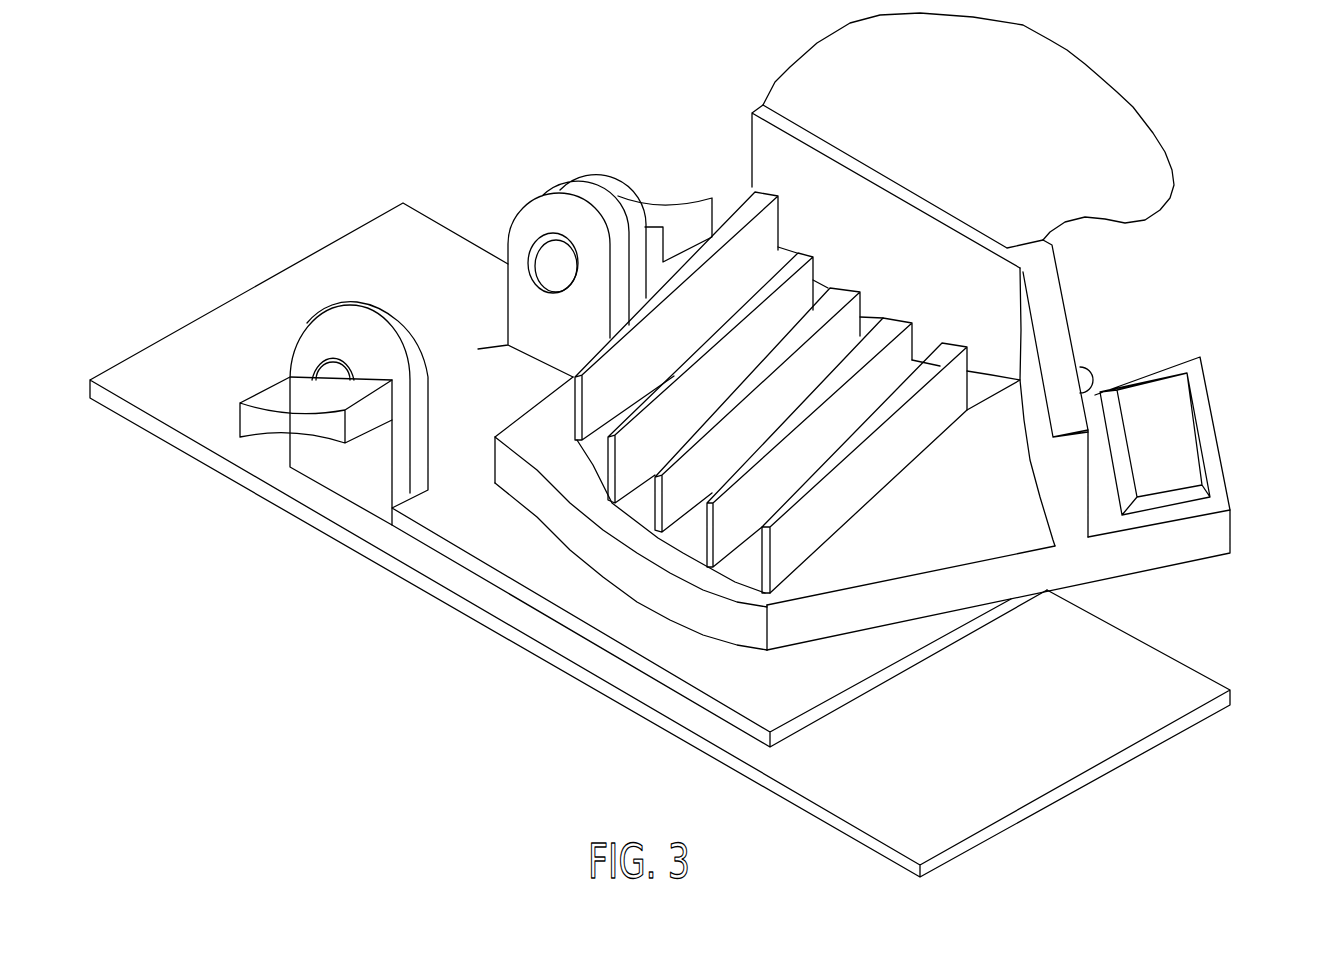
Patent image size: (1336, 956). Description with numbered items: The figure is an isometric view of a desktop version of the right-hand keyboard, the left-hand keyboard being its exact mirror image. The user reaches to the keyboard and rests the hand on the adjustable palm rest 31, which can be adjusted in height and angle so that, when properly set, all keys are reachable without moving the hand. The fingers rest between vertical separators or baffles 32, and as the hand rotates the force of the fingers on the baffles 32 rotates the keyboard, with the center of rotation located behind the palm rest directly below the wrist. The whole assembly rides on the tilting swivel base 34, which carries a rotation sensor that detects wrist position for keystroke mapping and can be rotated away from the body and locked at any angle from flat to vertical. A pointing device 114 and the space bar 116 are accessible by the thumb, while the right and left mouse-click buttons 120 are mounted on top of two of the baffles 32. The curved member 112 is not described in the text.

The adjustable palm rest 31 is at (848, 73).
The baffles 32 is at (758, 568).
The tilting swivel base 34 is at (833, 667).
The curved base 112 is at (517, 434).
The pointing device 114 is at (1096, 366).
The space bar 116 is at (1177, 439).
The mouse-click buttons 120 is at (907, 322).